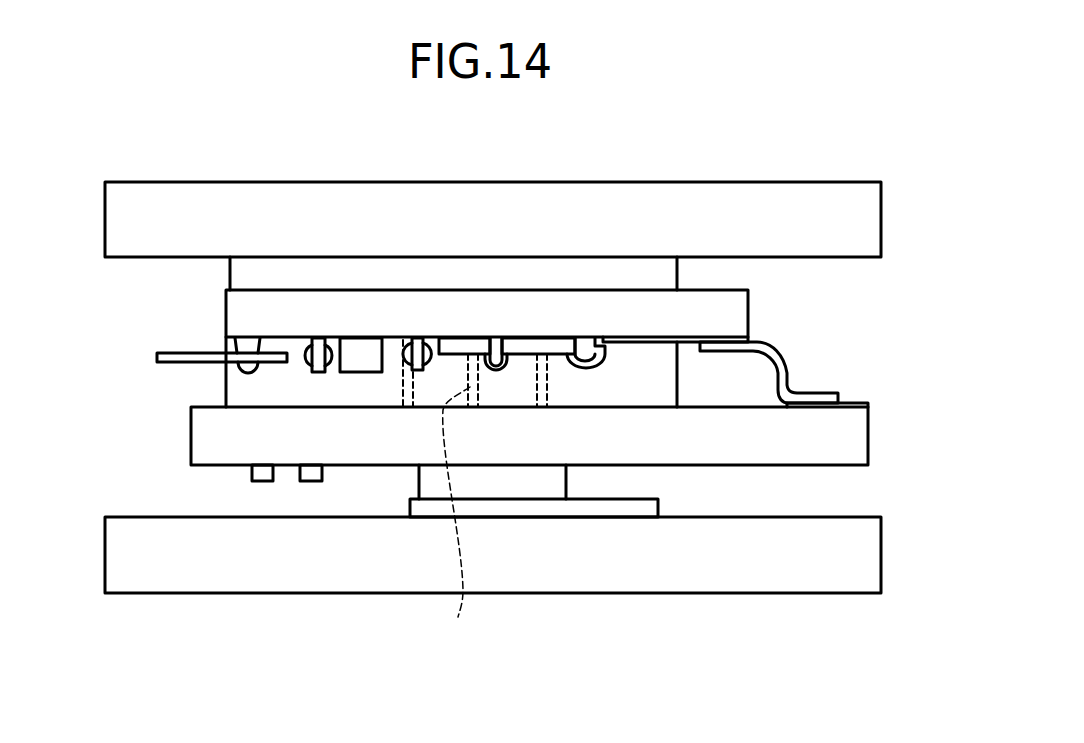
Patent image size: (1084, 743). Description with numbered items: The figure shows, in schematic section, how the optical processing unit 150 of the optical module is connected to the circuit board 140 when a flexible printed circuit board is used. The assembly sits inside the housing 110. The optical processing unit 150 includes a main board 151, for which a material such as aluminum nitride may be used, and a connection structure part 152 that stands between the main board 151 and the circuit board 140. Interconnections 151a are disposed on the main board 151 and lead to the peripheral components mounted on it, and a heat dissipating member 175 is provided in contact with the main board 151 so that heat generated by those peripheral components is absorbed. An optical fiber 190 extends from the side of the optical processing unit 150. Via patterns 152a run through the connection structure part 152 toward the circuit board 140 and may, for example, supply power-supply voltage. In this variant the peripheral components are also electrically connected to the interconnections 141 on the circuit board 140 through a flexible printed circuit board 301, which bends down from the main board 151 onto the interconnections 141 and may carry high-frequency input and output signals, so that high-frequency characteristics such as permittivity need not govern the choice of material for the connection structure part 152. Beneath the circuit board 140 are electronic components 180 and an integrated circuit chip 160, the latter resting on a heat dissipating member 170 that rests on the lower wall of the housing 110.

The housing 110 is at (752, 181).
The heat dissipating member 175 is at (678, 273).
The main board 151 is at (749, 312).
The interconnections 151a is at (631, 337).
The connection structure part 152 is at (678, 375).
The via patterns 152a is at (459, 518).
The optical processing unit 150 is at (208, 319).
The optical fiber 190 is at (177, 353).
The flexible printed circuit board 301 is at (786, 372).
The interconnections 141 is at (858, 392).
The circuit board 140 is at (869, 435).
The electronic components 180 is at (310, 481).
The integrated circuit chip 160 is at (548, 478).
The heat dissipating member 170 is at (607, 507).